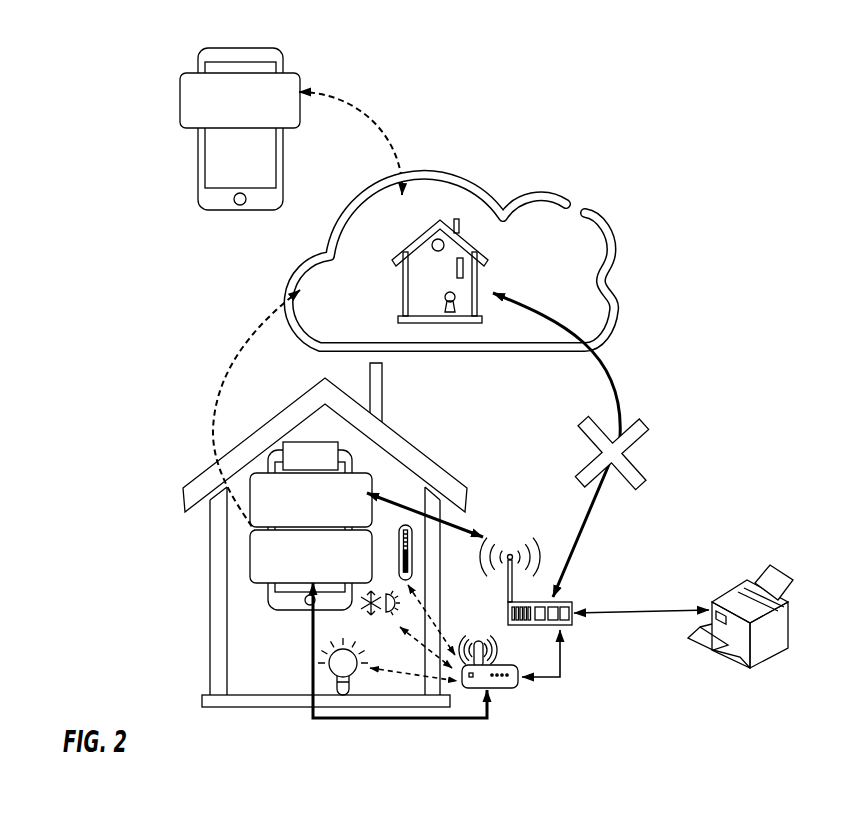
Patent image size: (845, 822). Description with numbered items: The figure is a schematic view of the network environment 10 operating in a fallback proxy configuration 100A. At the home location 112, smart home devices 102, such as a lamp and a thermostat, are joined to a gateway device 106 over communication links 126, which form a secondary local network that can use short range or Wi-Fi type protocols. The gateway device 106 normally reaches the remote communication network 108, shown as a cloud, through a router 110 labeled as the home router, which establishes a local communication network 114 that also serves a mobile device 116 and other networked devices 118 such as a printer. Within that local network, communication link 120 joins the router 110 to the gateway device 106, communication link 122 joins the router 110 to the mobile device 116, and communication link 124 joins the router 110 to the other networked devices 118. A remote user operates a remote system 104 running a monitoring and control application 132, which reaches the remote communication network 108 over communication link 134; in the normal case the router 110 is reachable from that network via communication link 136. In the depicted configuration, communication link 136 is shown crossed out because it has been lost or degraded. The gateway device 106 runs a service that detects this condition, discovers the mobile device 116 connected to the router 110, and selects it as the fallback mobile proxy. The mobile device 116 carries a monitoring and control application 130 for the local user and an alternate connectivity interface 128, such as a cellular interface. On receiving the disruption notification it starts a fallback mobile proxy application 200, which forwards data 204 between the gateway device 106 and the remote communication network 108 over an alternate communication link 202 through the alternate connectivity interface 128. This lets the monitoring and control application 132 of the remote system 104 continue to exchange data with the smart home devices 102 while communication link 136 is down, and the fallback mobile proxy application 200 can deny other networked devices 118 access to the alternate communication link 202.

The network environment 10 is at (563, 32).
The fallback proxy configuration 100A is at (662, 212).
The smart home devices 102 is at (342, 693).
The remote system 104 is at (272, 70).
The gateway device 106 is at (497, 688).
The remote communication network 108 is at (543, 193).
The router 110 is at (508, 612).
The home location 112 is at (220, 698).
The local communication network 114 is at (537, 500).
The mobile device 116 is at (290, 592).
The other networked devices 118 is at (740, 667).
The communication link 120 is at (562, 652).
The communication link 122 is at (463, 535).
The communication link 124 is at (620, 613).
The communication links 126 is at (418, 677).
The alternate connectivity interface 128 is at (288, 458).
The monitoring and control application 130 is at (363, 477).
The monitoring and control application 132 is at (196, 122).
The communication link 134 is at (367, 113).
The communication link 136 is at (620, 383).
The fallback mobile proxy application 200 is at (255, 574).
The alternate communication link 202 is at (230, 358).
The data 204 is at (330, 720).